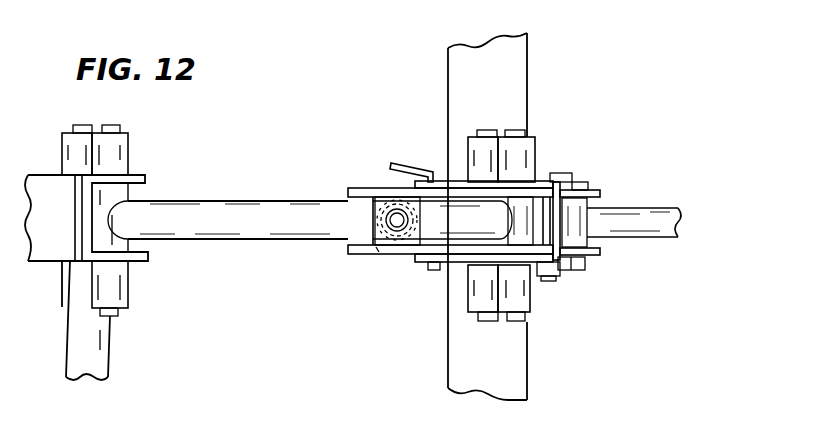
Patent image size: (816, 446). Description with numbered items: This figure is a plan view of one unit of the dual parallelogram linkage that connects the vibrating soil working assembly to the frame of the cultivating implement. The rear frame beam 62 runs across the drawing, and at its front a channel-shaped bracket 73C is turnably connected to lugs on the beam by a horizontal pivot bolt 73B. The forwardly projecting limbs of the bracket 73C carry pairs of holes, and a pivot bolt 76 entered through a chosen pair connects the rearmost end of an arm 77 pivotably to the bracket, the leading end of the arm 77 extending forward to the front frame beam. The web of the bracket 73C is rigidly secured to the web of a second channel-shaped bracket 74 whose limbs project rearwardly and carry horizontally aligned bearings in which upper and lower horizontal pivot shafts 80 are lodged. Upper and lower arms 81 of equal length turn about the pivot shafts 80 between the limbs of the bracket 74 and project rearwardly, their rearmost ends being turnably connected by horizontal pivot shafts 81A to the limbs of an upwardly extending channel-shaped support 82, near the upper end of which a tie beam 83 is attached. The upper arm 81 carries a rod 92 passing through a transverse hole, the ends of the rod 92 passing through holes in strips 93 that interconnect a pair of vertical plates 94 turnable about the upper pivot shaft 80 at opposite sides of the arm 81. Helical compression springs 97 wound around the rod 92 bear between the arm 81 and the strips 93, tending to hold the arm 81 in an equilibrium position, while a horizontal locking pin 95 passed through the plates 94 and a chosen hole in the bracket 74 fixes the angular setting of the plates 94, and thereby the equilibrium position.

The rear frame beam 62 is at (518, 64).
The pivot shaft 80 is at (514, 130).
The second bracket 74 is at (442, 181).
The vertical plate 94 is at (348, 192).
The strip 93 is at (375, 209).
The rod 92 is at (396, 216).
The helical compression spring 97 is at (381, 255).
The locking pin 95 is at (394, 163).
The arm 81 is at (228, 240).
The pivot shaft 81A is at (109, 126).
The upwardly extending support 82 is at (146, 178).
The tie beam 83 is at (110, 363).
The bracket 73C is at (600, 195).
The arm 77 is at (626, 238).
The pivot bolt 76 is at (572, 272).
The pivot bolt 73B is at (548, 283).